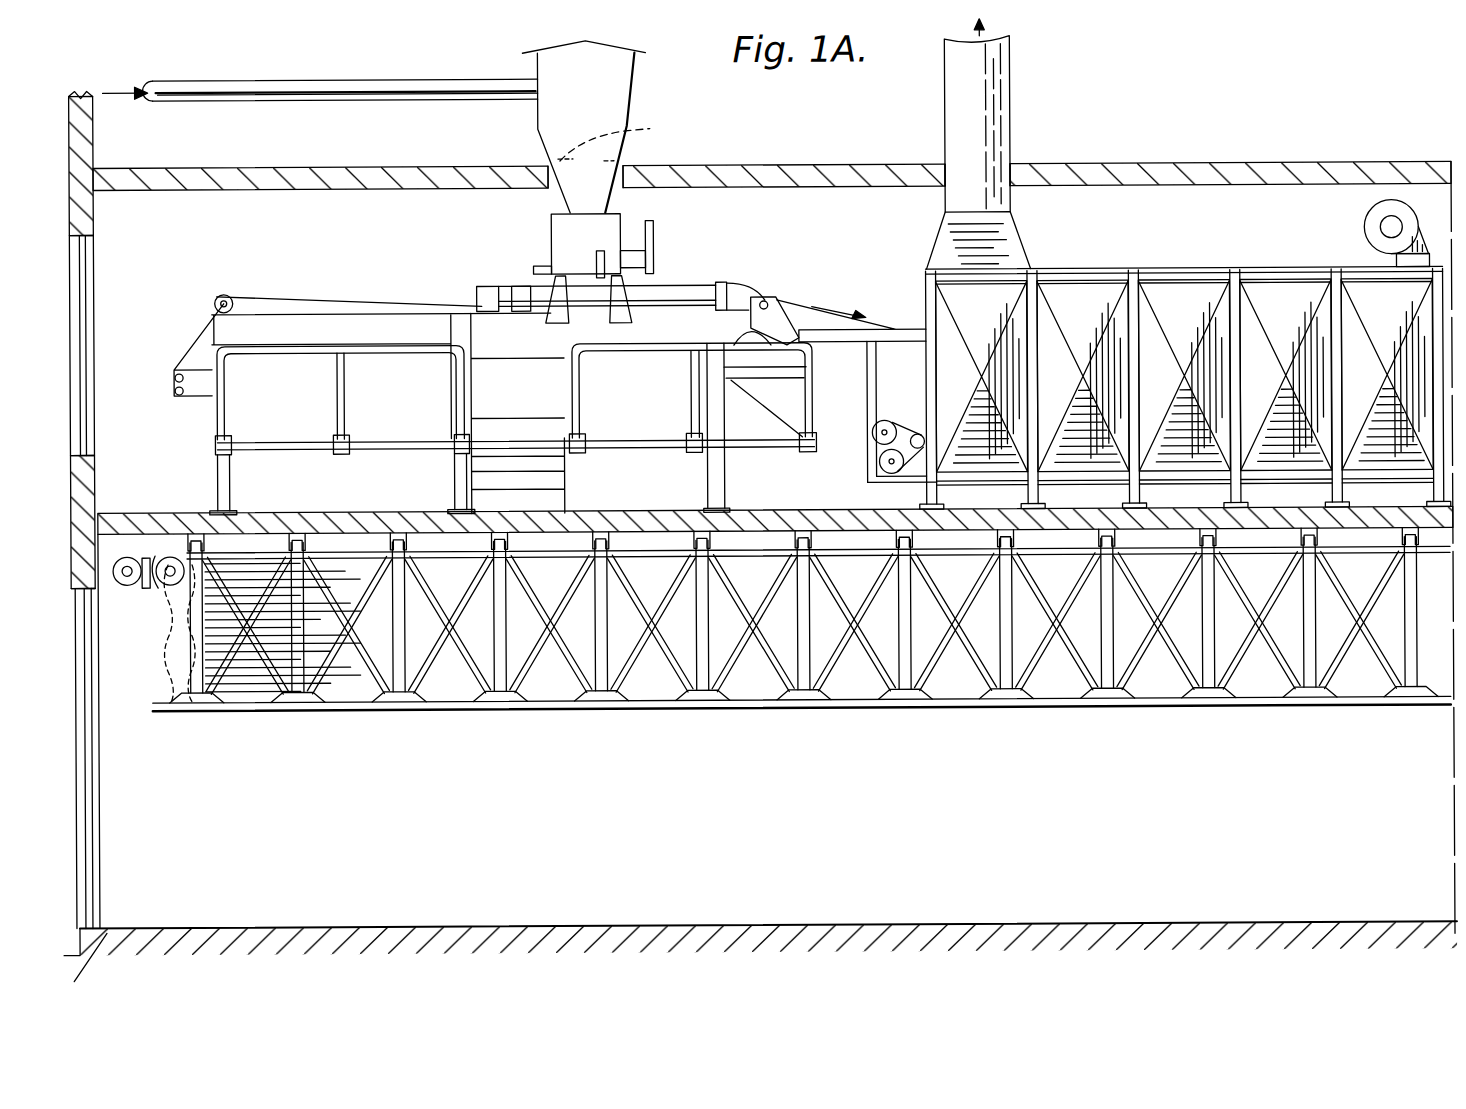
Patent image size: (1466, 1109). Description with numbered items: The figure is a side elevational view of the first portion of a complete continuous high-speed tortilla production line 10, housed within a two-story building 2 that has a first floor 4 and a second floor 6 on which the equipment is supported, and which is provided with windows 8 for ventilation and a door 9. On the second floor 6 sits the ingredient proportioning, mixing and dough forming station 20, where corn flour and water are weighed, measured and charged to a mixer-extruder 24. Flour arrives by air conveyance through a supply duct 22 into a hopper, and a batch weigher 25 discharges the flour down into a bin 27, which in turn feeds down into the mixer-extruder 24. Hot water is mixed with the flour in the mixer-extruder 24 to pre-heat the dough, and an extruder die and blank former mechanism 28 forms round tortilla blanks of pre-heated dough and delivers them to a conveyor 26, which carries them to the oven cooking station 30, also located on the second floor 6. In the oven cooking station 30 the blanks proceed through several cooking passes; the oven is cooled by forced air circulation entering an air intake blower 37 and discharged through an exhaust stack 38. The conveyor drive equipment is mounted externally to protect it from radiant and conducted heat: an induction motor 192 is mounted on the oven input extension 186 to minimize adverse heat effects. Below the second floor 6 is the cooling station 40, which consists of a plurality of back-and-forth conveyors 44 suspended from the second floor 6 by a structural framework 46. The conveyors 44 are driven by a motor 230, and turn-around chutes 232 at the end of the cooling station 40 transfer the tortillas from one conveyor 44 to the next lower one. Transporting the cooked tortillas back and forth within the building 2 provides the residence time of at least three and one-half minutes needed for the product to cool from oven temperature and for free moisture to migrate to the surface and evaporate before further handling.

The two-story building 2 is at (1165, 158).
The first floor 4 is at (460, 928).
The second floor 6 is at (148, 512).
The windows 8 is at (87, 310).
The door 9 is at (98, 808).
The production line 10 is at (1268, 210).
The ingredient proportioning, mixing and dough forming station 20 is at (422, 266).
The supply duct 22 is at (380, 76).
The mixer-extruder 24 is at (618, 94).
The batch weigher 25 is at (630, 138).
The conveyor 26 is at (875, 320).
The bin 27 is at (553, 226).
The extruder die and blank former mechanism 28 is at (742, 280).
The oven cooking station 30 is at (1221, 254).
The air intake blower 37 is at (1366, 232).
The exhaust stack 38 is at (947, 109).
The cooling station 40 is at (778, 711).
The conveyors 44 is at (245, 578).
The structural framework 46 is at (880, 580).
The oven input extension 186 is at (868, 380).
The induction motor 192 is at (880, 470).
The motor 230 is at (133, 585).
The turn-around chutes 232 is at (172, 632).